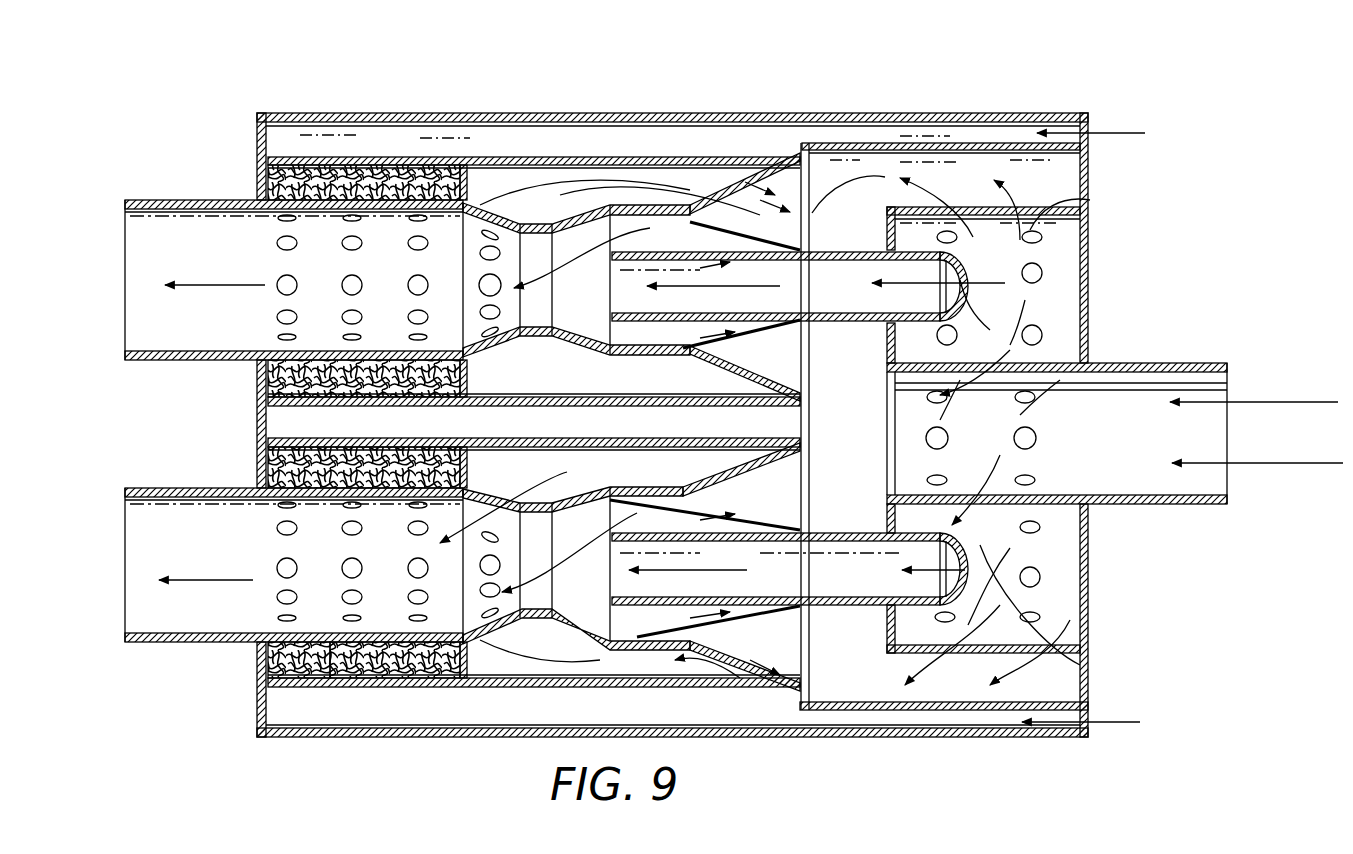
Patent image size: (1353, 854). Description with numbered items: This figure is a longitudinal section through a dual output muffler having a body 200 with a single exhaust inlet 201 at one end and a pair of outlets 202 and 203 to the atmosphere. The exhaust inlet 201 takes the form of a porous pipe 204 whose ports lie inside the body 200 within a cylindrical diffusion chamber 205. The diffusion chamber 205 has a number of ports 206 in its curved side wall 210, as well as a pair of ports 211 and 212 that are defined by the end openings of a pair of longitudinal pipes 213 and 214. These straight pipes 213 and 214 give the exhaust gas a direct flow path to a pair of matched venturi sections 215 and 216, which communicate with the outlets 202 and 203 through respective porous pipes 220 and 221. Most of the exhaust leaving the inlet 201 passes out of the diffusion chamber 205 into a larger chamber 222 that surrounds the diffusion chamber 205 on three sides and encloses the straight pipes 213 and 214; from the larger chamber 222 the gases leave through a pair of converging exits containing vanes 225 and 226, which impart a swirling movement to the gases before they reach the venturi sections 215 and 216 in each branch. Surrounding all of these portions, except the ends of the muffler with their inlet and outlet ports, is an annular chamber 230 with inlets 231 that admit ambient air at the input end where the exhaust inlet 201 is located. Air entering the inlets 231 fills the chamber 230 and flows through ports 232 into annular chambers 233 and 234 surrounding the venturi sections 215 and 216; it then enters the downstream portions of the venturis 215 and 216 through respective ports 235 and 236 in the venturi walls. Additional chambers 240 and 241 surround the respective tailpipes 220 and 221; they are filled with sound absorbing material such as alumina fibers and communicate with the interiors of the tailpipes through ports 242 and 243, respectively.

The body 200 is at (1035, 113).
The exhaust inlet 201 is at (1208, 428).
The outlet 202 is at (193, 200).
The outlet 203 is at (200, 523).
The porous pipe 204 is at (1175, 388).
The cylindrical diffusion chamber 205 is at (1060, 262).
The ports 206 is at (968, 238).
The curved side wall 210 is at (1087, 666).
The port 211 is at (1005, 280).
The port 212 is at (975, 566).
The longitudinal pipe 213 is at (851, 321).
The longitudinal pipe 214 is at (832, 530).
The venturi section 215 is at (570, 205).
The venturi section 216 is at (593, 650).
The porous pipe 220 is at (345, 165).
The porous pipe 221 is at (265, 635).
The larger chamber 222 is at (905, 165).
The vanes 225 is at (768, 165).
The vanes 226 is at (718, 665).
The annular chamber 230 is at (607, 142).
The inlets 231 is at (1090, 126).
The ports 232 is at (727, 155).
The annular chamber 233 is at (655, 185).
The annular chamber 234 is at (633, 668).
The ports 235 is at (505, 213).
The ports 236 is at (497, 500).
The chamber 240 is at (317, 175).
The chamber 241 is at (290, 665).
The ports 242 is at (290, 225).
The ports 243 is at (345, 665).